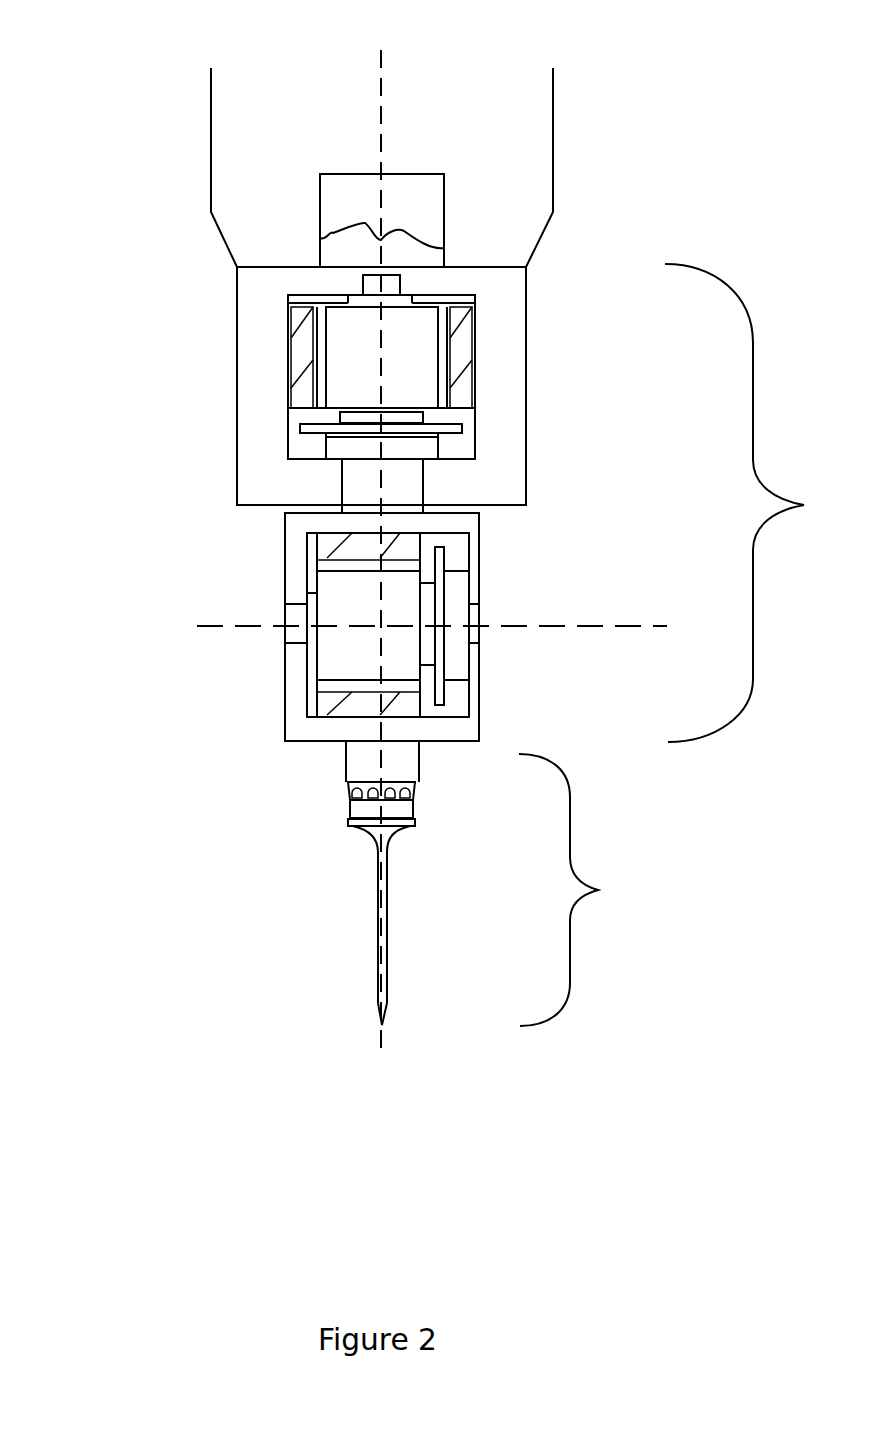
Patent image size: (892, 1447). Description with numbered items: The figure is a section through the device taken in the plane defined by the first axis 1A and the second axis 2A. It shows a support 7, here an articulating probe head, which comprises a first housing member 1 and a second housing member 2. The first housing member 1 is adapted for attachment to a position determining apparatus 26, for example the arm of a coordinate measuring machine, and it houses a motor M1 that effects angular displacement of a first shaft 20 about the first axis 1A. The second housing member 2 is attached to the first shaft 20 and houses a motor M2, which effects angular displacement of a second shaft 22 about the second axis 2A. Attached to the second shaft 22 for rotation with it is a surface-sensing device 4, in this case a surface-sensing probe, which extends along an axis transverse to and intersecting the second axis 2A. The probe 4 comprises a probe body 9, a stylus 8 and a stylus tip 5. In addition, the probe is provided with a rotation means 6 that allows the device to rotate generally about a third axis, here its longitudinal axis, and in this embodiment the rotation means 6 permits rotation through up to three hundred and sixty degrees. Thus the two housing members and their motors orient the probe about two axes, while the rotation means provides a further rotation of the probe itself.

The first axis 1A is at (375, 529).
The position determining apparatus 26 is at (263, 117).
The first housing member 1 is at (253, 297).
The motor M1 is at (370, 358).
The first shaft 20 is at (363, 477).
The second housing member 2 is at (297, 563).
The second shaft 22 is at (297, 616).
The motor M2 is at (346, 657).
The second axis 2A is at (453, 629).
The probe body 9 is at (357, 752).
The rotation means 6 is at (347, 790).
The stylus 8 is at (359, 888).
The stylus tip 5 is at (377, 1018).
The support 7 is at (755, 503).
The surface-sensing device 4 is at (574, 890).